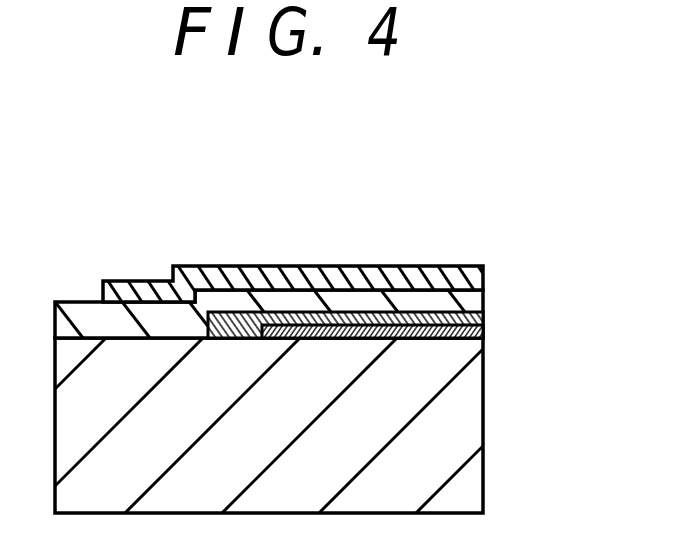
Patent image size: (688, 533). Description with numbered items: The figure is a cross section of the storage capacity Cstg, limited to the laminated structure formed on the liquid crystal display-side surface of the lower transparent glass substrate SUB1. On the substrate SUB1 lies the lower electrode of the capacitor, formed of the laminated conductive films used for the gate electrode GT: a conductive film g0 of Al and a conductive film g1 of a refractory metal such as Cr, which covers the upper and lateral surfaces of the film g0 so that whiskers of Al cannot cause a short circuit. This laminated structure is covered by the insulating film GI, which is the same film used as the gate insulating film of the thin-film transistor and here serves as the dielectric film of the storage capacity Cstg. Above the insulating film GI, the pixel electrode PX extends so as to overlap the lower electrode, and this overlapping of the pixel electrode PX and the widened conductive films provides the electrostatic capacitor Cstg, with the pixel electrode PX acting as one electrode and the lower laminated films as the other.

The lower transparent glass substrate SUB1 is at (483, 410).
The insulating film GI is at (83, 310).
The gate electrode GT is at (420, 327).
The conductive film g0 is at (483, 322).
The conductive film g1 is at (483, 329).
The pixel electrode PX is at (300, 249).
The storage capacity Cstg is at (300, 195).